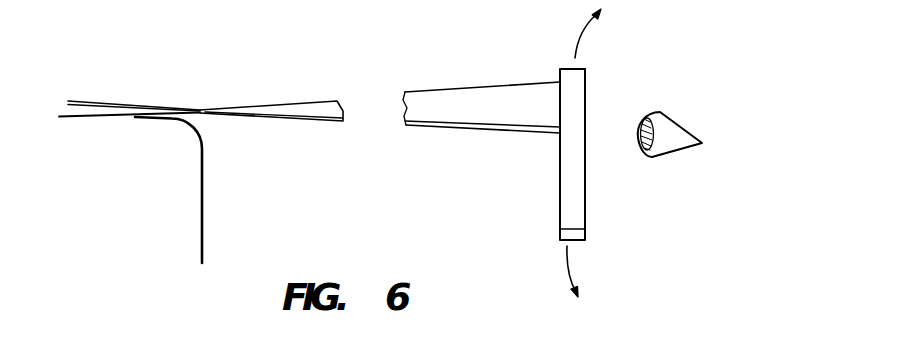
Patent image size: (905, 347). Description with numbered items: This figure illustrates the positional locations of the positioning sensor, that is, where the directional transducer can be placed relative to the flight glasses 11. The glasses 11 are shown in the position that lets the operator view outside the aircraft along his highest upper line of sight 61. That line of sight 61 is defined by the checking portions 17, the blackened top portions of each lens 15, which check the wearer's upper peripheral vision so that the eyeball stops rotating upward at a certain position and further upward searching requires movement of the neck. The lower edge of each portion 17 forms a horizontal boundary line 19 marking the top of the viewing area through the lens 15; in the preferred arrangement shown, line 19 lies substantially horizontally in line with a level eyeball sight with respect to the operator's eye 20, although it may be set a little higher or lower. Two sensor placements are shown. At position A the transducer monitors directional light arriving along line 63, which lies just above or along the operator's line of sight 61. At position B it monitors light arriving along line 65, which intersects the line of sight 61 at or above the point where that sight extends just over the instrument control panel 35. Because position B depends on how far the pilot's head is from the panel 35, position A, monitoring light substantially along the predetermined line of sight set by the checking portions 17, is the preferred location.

The flight glasses 11 is at (505, 207).
The lens 15 is at (575, 192).
The top portion 17 is at (578, 104).
The horizontal boundary line 19 is at (580, 133).
The operator's eye 20 is at (693, 134).
The instrument control panel 35 is at (152, 180).
The upper line of sight 61 is at (468, 133).
The line 63 is at (470, 123).
The line 65 is at (482, 87).